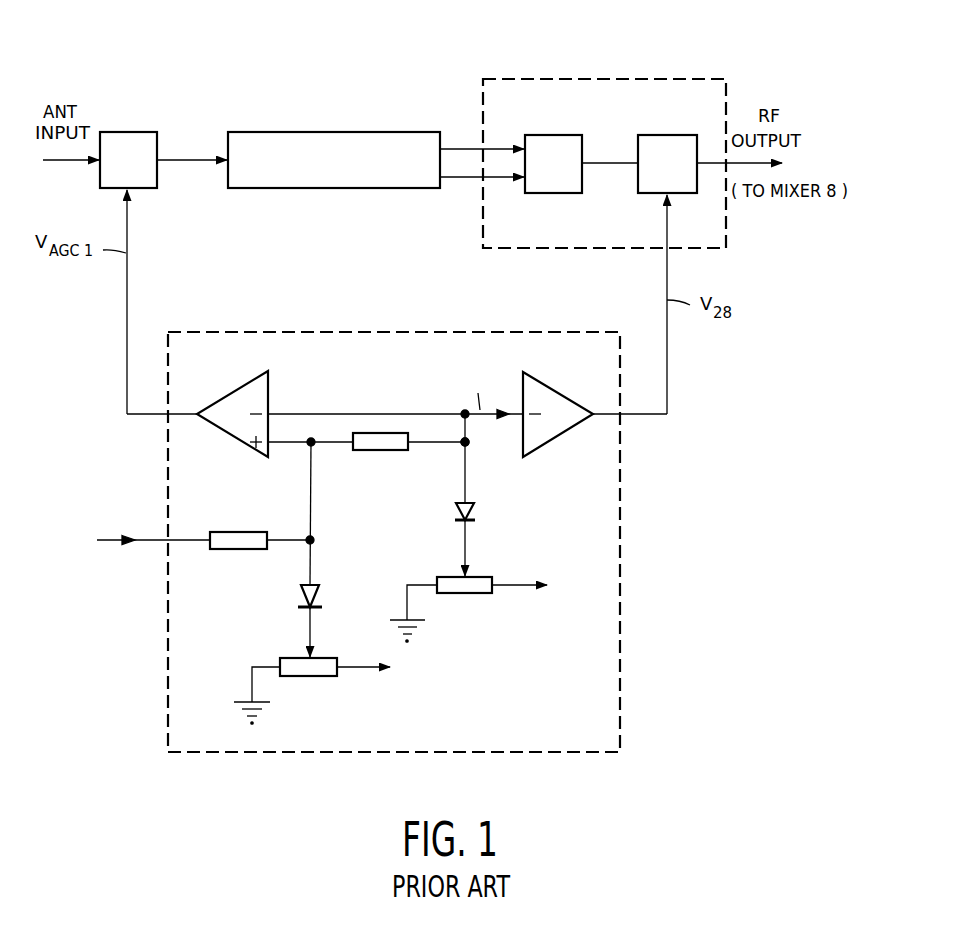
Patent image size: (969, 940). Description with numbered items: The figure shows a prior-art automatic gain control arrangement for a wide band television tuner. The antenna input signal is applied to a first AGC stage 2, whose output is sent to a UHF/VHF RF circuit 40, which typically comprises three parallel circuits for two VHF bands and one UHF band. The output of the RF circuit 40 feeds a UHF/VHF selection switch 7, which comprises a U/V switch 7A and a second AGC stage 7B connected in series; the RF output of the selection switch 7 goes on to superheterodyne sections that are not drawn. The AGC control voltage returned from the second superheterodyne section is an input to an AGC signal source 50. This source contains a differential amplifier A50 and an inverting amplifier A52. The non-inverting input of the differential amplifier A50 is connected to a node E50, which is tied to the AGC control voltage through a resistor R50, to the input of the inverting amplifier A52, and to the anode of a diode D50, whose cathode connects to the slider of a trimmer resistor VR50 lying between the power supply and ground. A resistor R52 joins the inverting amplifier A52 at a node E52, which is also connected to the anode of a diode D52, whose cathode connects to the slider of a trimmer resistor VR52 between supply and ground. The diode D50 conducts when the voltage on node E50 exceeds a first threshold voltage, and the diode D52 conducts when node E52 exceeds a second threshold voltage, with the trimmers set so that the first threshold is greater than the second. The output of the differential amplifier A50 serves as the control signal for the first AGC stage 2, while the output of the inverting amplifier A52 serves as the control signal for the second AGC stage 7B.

The first AGC stage 2 is at (131, 130).
The UHF/VHF RF circuit 40 is at (338, 130).
The UHF/VHF selection switch 7 is at (611, 78).
The U/V switch 7A is at (547, 134).
The second AGC stage 7B is at (668, 134).
The AGC signal source 50 is at (410, 330).
The differential amplifier A50 is at (226, 392).
The inverting amplifier A52 is at (564, 392).
The resistor R50 is at (233, 530).
The resistor R52 is at (380, 455).
The node E50 is at (318, 540).
The node E52 is at (469, 446).
The diode D50 is at (290, 595).
The diode D52 is at (477, 509).
The trimmer resistor VR50 is at (312, 681).
The trimmer resistor VR52 is at (473, 597).